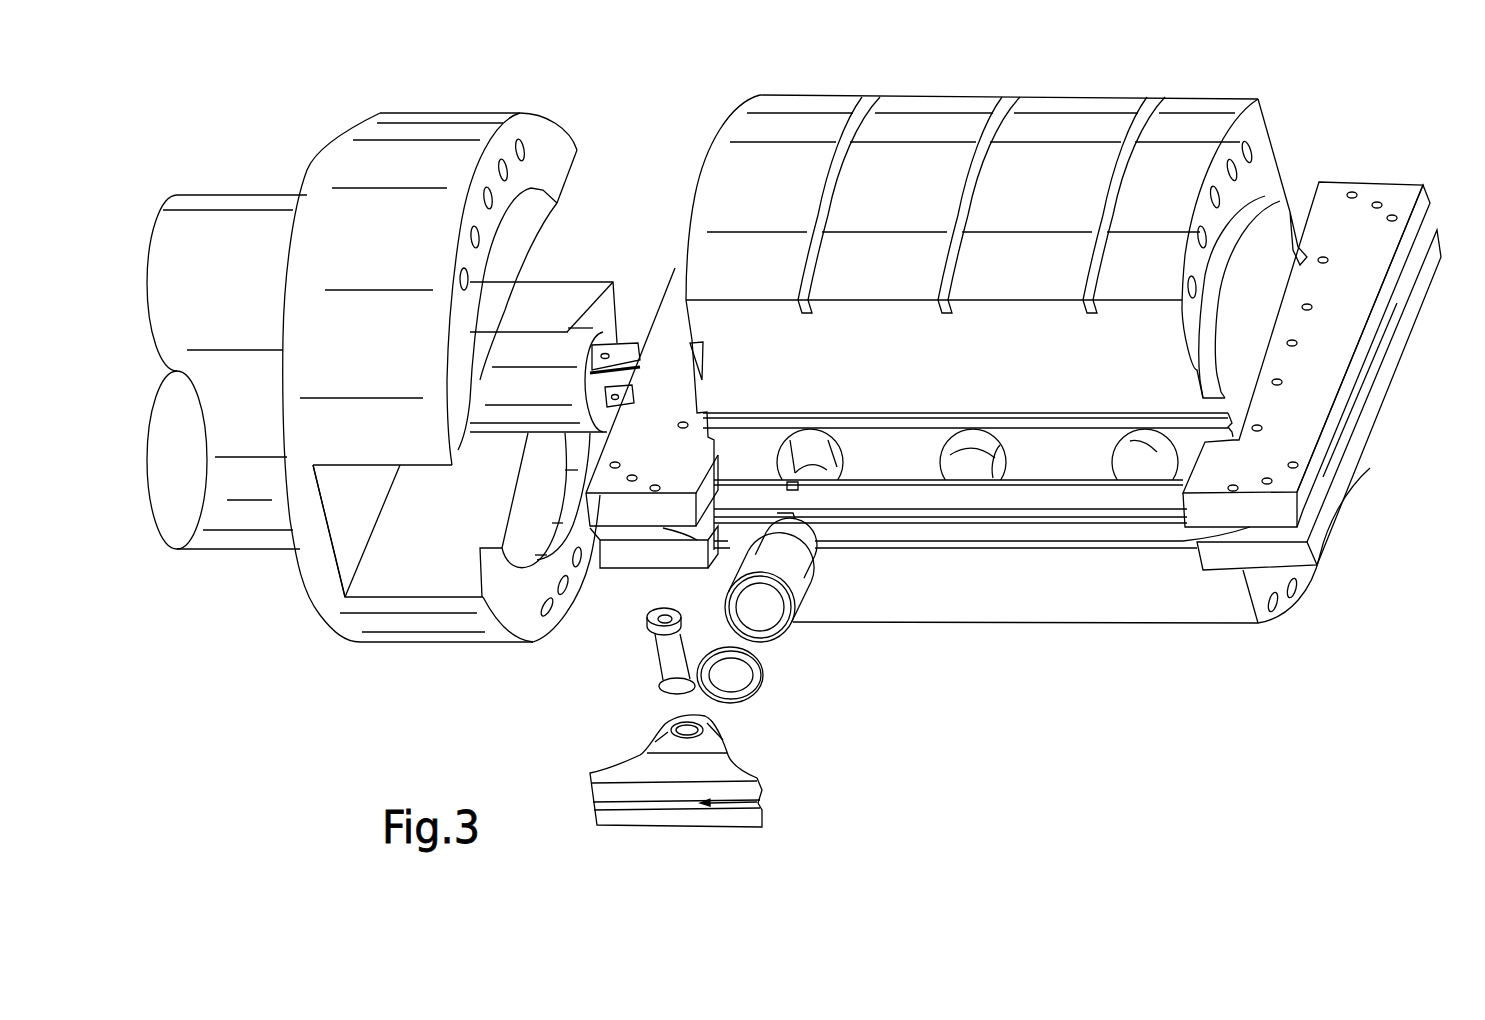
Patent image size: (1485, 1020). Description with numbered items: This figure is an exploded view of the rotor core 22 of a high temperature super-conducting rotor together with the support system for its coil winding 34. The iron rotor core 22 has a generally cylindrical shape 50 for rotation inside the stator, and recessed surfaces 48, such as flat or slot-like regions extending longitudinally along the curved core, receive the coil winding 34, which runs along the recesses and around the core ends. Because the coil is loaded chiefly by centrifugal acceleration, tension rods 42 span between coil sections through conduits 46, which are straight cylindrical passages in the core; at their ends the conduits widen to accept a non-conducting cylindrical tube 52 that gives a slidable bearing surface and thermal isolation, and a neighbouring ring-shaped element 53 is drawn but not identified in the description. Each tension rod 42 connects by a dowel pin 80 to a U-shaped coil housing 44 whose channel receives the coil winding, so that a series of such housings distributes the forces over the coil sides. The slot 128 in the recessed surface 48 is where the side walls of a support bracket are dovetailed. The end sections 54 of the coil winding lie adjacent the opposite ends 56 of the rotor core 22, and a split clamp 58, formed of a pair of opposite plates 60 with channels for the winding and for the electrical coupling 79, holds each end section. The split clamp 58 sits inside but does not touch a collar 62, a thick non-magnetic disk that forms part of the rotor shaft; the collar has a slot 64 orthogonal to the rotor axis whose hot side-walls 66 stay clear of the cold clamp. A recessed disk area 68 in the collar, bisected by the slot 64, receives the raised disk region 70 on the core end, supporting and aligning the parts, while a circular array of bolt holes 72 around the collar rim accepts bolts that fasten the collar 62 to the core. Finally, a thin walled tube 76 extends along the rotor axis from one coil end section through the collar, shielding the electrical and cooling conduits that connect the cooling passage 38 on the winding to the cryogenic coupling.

The rotor core 22 is at (937, 103).
The coil winding 34 is at (1112, 505).
The cooling passage 38 is at (1117, 533).
The tension rod 42 is at (816, 493).
The coil housing 44 is at (772, 806).
The conduits 46 is at (1000, 460).
The recessed surfaces 48 is at (805, 371).
The generally cylindrical shape 50 is at (927, 257).
The non-conducting cylindrical tube 52 is at (765, 640).
The ring 53 is at (758, 695).
The end sections 54 is at (1317, 517).
The ends of the rotor core 56 is at (1307, 590).
The split clamp 58 is at (678, 273).
The plates 60 is at (1367, 203).
The collar 62 is at (418, 114).
The slot 64 is at (340, 537).
The side-walls 66 is at (427, 560).
The recessed disk area 68 is at (507, 226).
The raised disk region 70 is at (1292, 224).
The bolt holes 72 is at (527, 150).
The thin walled tube 76 is at (540, 373).
The electrical coupling 79 is at (627, 353).
The dowel pin 80 is at (642, 664).
The slot 128 is at (1043, 406).